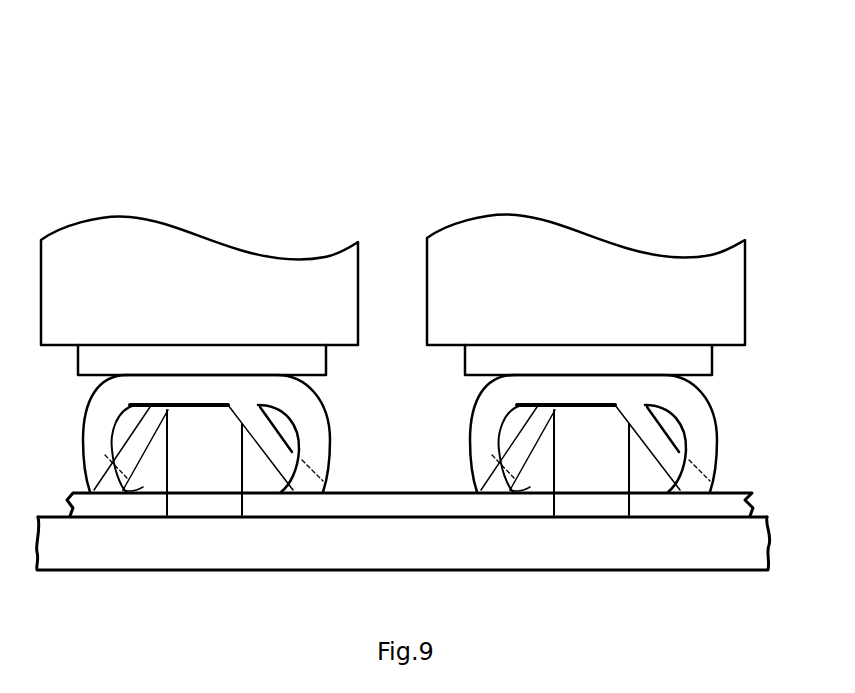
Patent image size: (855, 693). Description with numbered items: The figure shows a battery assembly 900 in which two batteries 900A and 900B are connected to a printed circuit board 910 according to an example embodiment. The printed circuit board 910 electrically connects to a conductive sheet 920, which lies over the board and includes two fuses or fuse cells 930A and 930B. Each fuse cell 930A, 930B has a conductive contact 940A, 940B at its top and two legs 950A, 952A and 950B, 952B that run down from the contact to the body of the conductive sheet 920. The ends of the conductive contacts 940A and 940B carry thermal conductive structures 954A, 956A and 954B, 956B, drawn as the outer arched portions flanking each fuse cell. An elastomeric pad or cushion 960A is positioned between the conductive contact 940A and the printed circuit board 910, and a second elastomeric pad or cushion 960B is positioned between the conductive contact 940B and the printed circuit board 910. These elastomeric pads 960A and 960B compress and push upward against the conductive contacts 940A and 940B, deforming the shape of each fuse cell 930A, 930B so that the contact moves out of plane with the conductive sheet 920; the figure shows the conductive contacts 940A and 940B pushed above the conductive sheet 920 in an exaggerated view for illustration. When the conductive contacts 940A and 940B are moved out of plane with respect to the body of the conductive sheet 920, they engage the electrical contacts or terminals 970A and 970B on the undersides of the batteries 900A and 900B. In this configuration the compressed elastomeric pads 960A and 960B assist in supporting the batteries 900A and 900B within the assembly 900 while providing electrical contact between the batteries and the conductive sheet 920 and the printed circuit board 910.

The assembly 900 is at (221, 84).
The battery 900A is at (158, 263).
The battery 900B is at (544, 263).
The printed circuit board 910 is at (143, 547).
The conductive sheet 920 is at (93, 505).
The fuse cell 930A is at (207, 420).
The fuse cell 930B is at (585, 420).
The conductive contact 940A is at (217, 393).
The conductive contact 940B is at (595, 393).
The leg 950A is at (135, 443).
The leg 950B is at (518, 455).
The leg 952A is at (273, 447).
The leg 952B is at (677, 460).
The thermal conductive structure 954A is at (85, 428).
The thermal conductive structure 954B is at (475, 428).
The thermal conductive structure 956A is at (292, 402).
The thermal conductive structure 956B is at (673, 395).
The elastomeric pad 960A is at (233, 474).
The elastomeric pad 960B is at (623, 474).
The electrical contact or terminal 970A is at (128, 363).
The electrical contact or terminal 970B is at (505, 363).